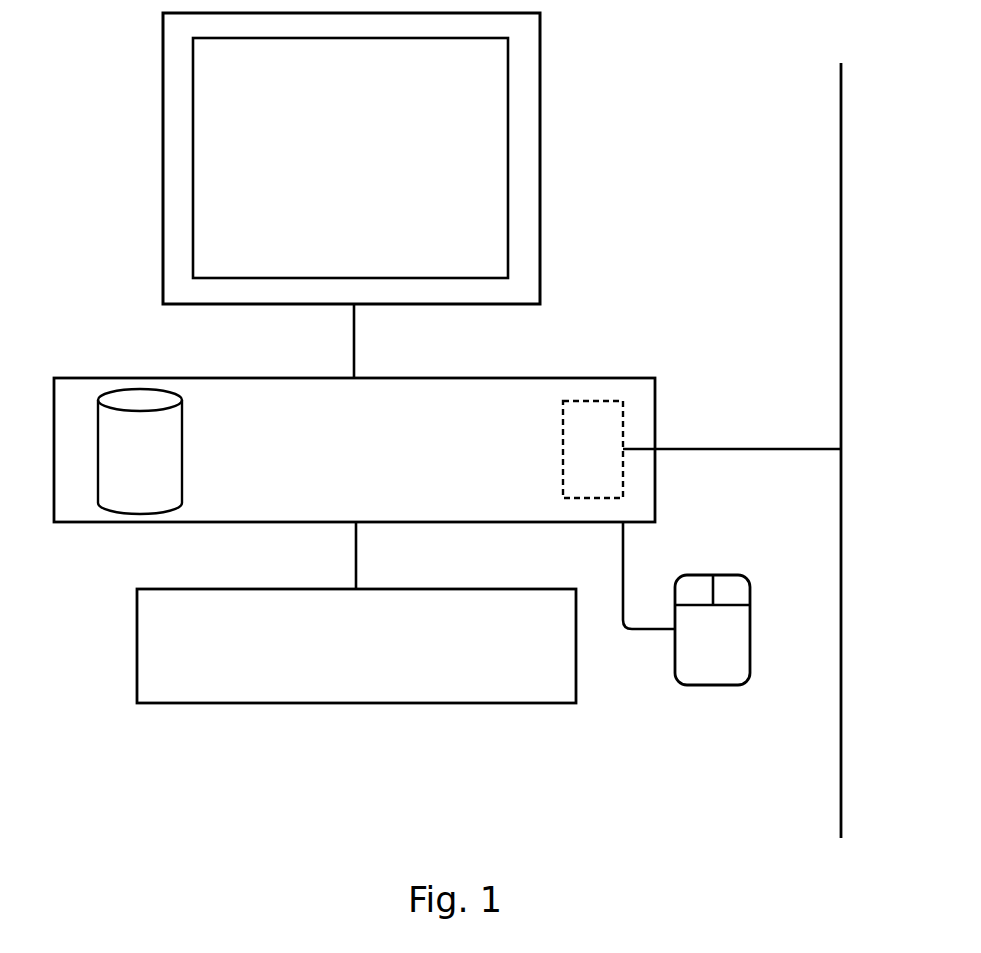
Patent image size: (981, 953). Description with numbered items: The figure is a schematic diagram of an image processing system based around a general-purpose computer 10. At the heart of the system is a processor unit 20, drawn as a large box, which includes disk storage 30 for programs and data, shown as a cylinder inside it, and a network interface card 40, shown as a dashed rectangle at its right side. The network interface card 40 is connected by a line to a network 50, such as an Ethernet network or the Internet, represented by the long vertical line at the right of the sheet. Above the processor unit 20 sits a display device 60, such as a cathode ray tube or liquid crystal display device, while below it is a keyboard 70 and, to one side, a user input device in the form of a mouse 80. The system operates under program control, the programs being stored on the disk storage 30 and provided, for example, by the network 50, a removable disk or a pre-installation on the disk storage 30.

The general-purpose computer 10 is at (77, 113).
The processor unit 20 is at (586, 377).
The disk storage 30 is at (138, 391).
The network interface card 40 is at (624, 433).
The network 50 is at (842, 321).
The display device 60 is at (541, 140).
The keyboard 70 is at (525, 704).
The mouse 80 is at (713, 687).